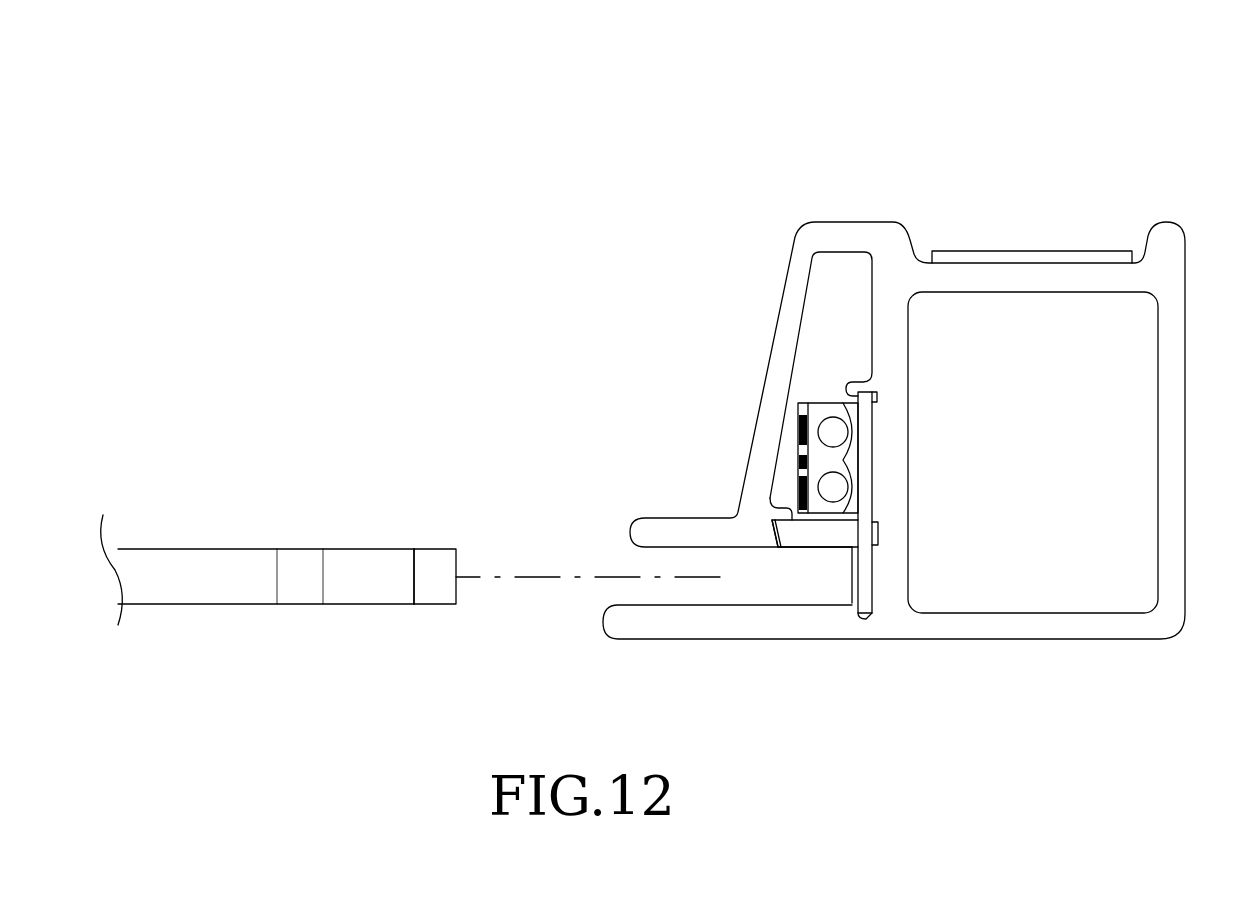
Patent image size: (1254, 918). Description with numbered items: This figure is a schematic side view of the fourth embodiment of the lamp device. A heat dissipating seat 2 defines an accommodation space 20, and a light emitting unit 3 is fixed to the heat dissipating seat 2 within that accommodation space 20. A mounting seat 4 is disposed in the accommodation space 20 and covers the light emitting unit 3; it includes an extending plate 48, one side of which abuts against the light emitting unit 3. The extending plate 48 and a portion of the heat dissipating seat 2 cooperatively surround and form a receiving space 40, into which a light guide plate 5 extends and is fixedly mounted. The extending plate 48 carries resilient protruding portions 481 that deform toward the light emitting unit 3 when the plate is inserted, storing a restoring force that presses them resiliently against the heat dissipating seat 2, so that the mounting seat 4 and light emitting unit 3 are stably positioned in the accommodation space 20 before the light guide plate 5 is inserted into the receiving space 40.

The heat dissipating seat 2 is at (1172, 168).
The accommodation space 20 is at (827, 278).
The light emitting unit 3 is at (877, 458).
The mounting seat 4 is at (765, 515).
The extending plate 48 is at (850, 537).
The resilient protruding portions 481 is at (772, 535).
The receiving space 40 is at (645, 590).
The light guide plate 5 is at (238, 565).